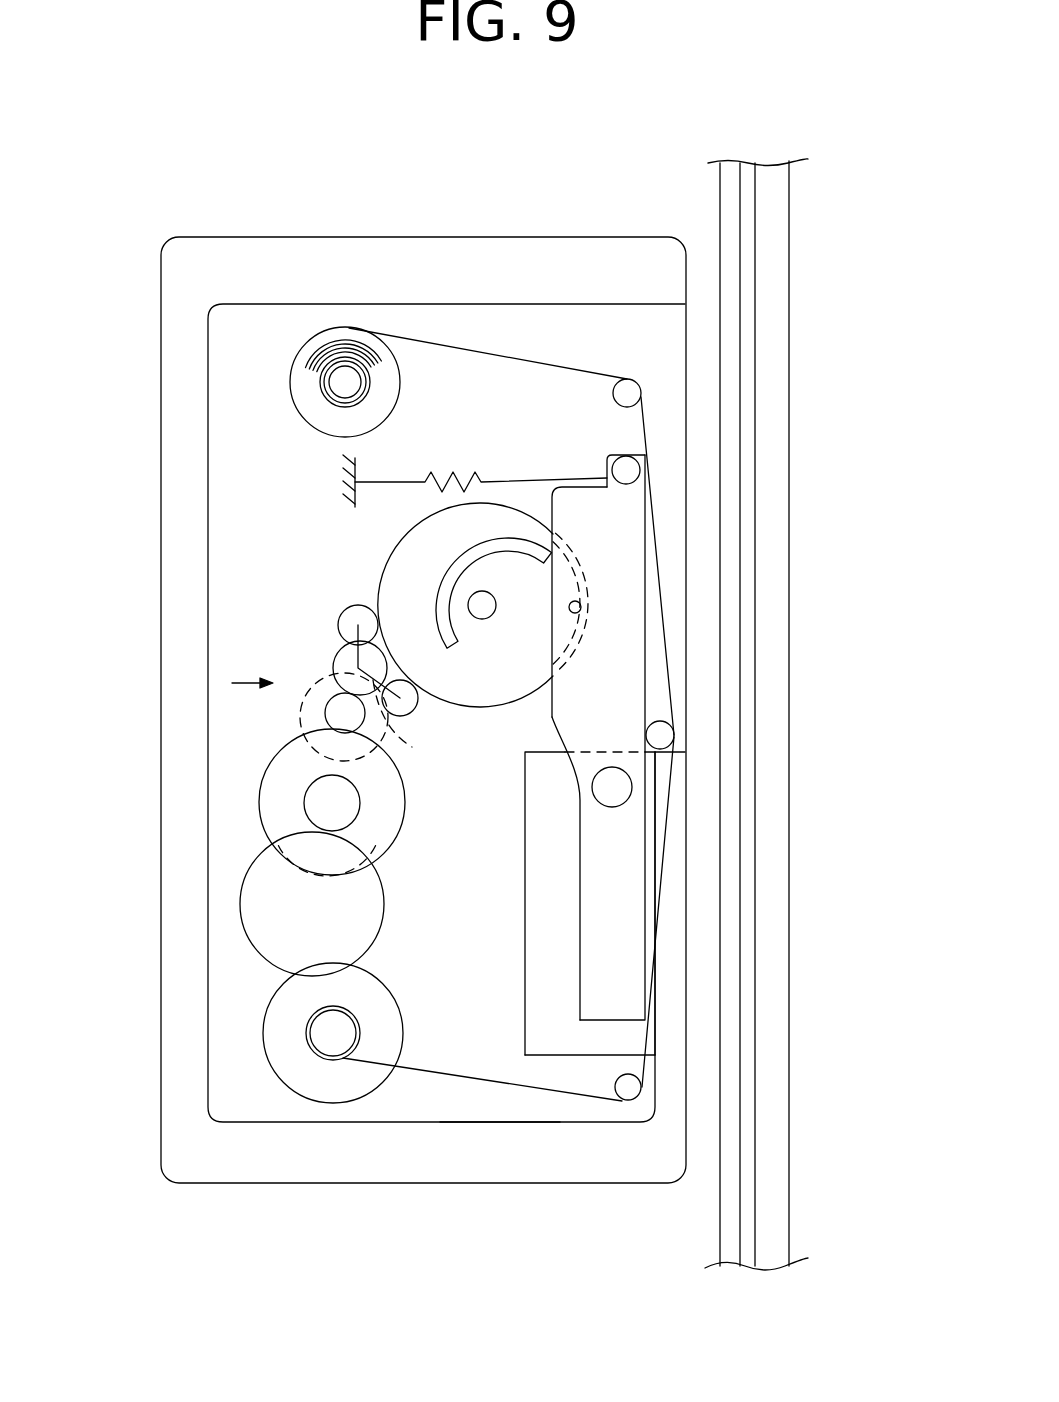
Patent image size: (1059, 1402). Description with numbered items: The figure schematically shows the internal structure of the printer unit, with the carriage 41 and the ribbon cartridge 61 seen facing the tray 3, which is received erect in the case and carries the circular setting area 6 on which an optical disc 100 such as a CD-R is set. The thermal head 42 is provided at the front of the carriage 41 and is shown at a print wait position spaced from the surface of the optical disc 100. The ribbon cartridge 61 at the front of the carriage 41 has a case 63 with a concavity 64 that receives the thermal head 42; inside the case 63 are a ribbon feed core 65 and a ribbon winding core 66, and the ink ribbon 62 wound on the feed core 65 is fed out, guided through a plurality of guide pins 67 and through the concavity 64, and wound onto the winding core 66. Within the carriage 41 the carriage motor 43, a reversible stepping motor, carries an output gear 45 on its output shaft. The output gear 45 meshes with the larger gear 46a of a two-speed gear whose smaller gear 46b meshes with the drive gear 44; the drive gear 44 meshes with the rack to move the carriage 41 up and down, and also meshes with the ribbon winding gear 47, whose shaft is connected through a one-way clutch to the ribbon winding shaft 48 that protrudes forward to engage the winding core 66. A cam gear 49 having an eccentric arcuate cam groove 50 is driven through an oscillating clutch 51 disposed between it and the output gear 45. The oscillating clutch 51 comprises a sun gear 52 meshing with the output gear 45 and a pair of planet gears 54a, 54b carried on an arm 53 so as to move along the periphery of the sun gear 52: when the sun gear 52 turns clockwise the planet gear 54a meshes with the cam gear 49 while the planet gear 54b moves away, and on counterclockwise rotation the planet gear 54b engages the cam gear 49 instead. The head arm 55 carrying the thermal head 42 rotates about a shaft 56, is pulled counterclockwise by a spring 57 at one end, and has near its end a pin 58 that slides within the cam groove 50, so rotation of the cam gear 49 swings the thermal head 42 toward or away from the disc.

The optical disc 100 is at (732, 188).
The setting area 6 is at (750, 487).
The tray 3 is at (772, 570).
The carriage 41 is at (377, 1170).
The case 63 is at (232, 410).
The ribbon cartridge 61 is at (497, 1130).
The ribbon feed core 65 is at (333, 385).
The ink ribbon 62 is at (477, 352).
The guide pins 67 is at (618, 396).
The spring 57 is at (496, 474).
The head arm 55 is at (625, 660).
The thermal head 42 is at (655, 975).
The concavity 64 is at (567, 1030).
The shaft 56 is at (614, 790).
The cam gear 49 is at (388, 580).
The cam groove 50 is at (440, 578).
The pin 58 is at (569, 608).
The planet gear 54a is at (343, 617).
The sun gear 52 is at (340, 660).
The output gear 45 is at (337, 712).
The planet gear 54b is at (415, 703).
The arm 53 is at (411, 742).
The carriage motor 43 is at (312, 688).
The oscillating clutch 51 is at (235, 683).
The larger gear of two-speed gear 46a is at (383, 793).
The smaller gear of two-speed gear 46b is at (338, 805).
The drive gear 44 is at (355, 912).
The ribbon winding gear 47 is at (273, 1020).
The ribbon winding shaft 48 is at (343, 1022).
The ribbon winding core 66 is at (305, 1037).